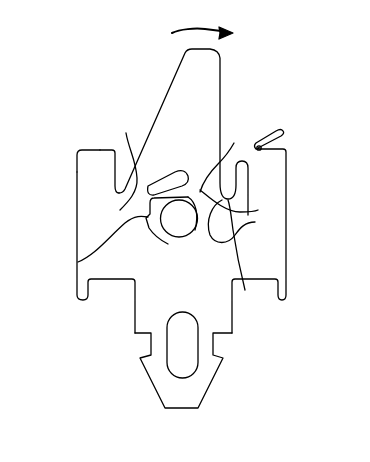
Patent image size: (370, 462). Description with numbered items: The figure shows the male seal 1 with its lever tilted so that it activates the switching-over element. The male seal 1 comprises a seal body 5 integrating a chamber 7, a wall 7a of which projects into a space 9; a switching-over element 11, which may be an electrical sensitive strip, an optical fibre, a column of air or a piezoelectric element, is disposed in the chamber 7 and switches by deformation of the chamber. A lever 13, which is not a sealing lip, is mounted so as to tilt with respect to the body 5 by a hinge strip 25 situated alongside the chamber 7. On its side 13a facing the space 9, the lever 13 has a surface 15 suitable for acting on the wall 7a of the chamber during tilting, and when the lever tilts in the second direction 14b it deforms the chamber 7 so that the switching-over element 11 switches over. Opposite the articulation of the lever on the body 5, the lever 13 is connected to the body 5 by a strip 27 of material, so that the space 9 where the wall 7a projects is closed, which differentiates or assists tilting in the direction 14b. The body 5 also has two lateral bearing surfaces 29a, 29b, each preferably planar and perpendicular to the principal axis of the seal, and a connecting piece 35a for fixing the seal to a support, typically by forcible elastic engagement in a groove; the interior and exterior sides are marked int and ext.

The male seal 1 is at (96, 118).
The seal body 5 is at (273, 254).
The chamber 7 is at (78, 262).
The wall of the chamber 7a is at (245, 290).
The space 9 is at (255, 222).
The switching-over element 11 is at (177, 220).
The lever 13 is at (197, 69).
The side of the lever facing the space 13a is at (186, 190).
The second tilting direction 14b is at (188, 25).
The surface of the lever 15 is at (234, 143).
The hinge strip 25 is at (126, 133).
The strip of material 27 is at (258, 210).
The lateral bearing surface 29a is at (88, 148).
The lateral bearing surface 29b is at (284, 148).
The connecting piece 35a is at (203, 378).